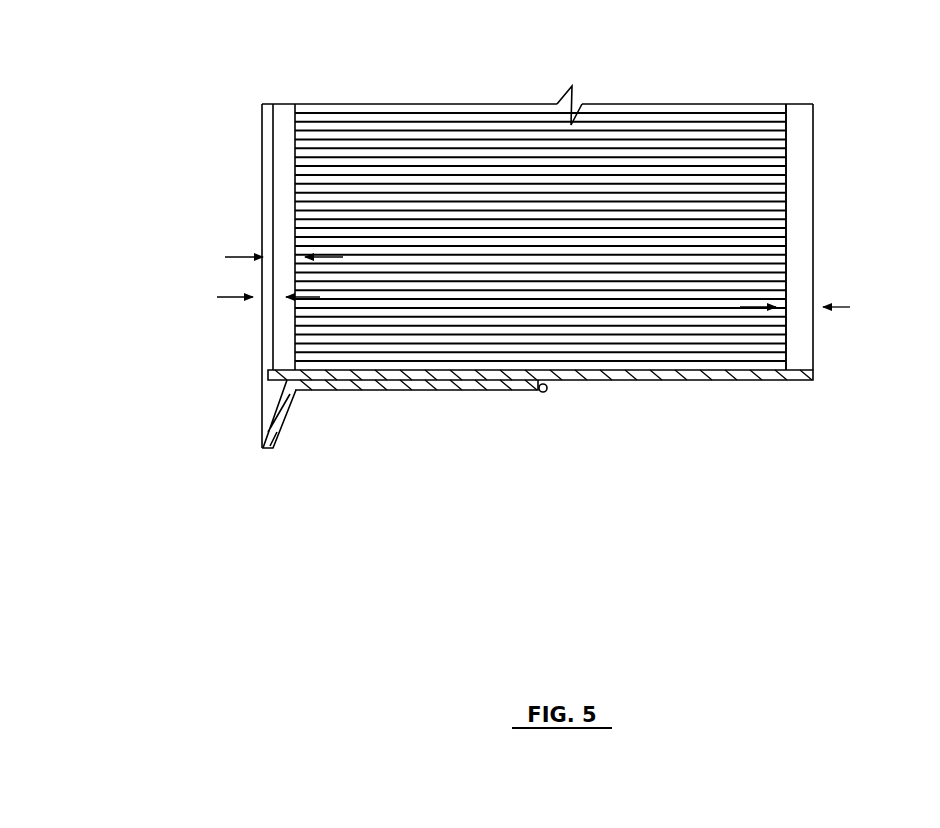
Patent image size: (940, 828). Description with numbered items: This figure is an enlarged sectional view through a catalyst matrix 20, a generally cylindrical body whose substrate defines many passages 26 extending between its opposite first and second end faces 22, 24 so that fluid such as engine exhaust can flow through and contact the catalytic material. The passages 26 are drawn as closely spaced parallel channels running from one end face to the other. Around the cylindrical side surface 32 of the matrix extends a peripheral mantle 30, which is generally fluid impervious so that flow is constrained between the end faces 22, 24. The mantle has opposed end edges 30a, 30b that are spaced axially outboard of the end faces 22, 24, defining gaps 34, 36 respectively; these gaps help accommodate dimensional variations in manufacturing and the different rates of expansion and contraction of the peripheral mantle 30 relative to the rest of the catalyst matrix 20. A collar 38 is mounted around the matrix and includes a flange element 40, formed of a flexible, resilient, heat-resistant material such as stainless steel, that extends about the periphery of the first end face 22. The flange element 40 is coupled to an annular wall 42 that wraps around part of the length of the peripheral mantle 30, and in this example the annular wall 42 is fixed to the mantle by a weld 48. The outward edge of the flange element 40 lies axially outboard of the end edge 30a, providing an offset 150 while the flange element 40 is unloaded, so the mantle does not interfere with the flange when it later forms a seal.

The catalyst matrix 20 is at (765, 392).
The first end face 22 is at (284, 143).
The second end face 24 is at (810, 200).
The passages 26 is at (423, 138).
The peripheral mantle 30 is at (693, 382).
The first end edge of peripheral mantle 30a is at (260, 378).
The second end edge of peripheral mantle 30b is at (815, 381).
The side surface 32 is at (640, 381).
The first gap 34 is at (243, 257).
The second gap 36 is at (850, 307).
The collar 38 is at (407, 400).
The flange element 40 is at (268, 405).
The annular wall 42 is at (493, 391).
The weld 48 is at (547, 392).
The offset 150 is at (225, 297).